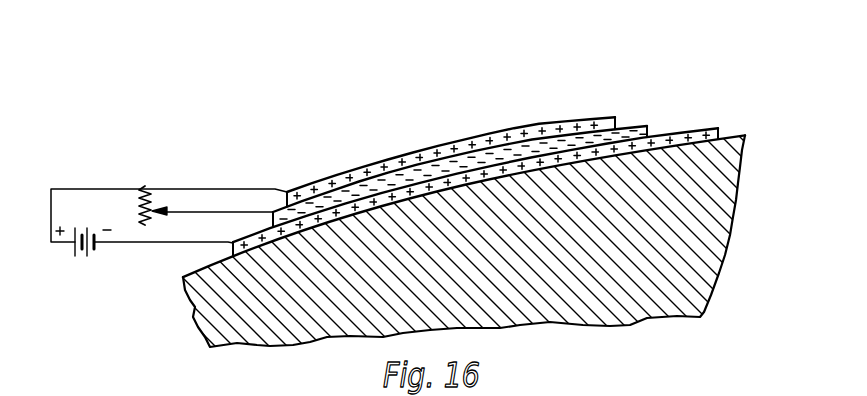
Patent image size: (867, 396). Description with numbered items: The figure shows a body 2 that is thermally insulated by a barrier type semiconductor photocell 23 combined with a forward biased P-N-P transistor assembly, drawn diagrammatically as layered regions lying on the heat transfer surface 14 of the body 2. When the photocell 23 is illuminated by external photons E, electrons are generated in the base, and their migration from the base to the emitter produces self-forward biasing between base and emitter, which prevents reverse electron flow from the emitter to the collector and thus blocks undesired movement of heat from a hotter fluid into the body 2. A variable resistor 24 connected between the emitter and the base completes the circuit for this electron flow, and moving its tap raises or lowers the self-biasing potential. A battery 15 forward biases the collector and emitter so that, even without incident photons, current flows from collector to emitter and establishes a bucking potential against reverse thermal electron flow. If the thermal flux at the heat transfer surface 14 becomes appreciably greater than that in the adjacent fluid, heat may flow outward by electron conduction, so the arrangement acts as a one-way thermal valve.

The body 2 is at (713, 218).
The heat transfer surface 14 is at (742, 135).
The battery 15 is at (83, 261).
The barrier type semiconductor photocell 23 is at (477, 141).
The variable resistor 24 is at (140, 203).
The external photons E is at (440, 3).